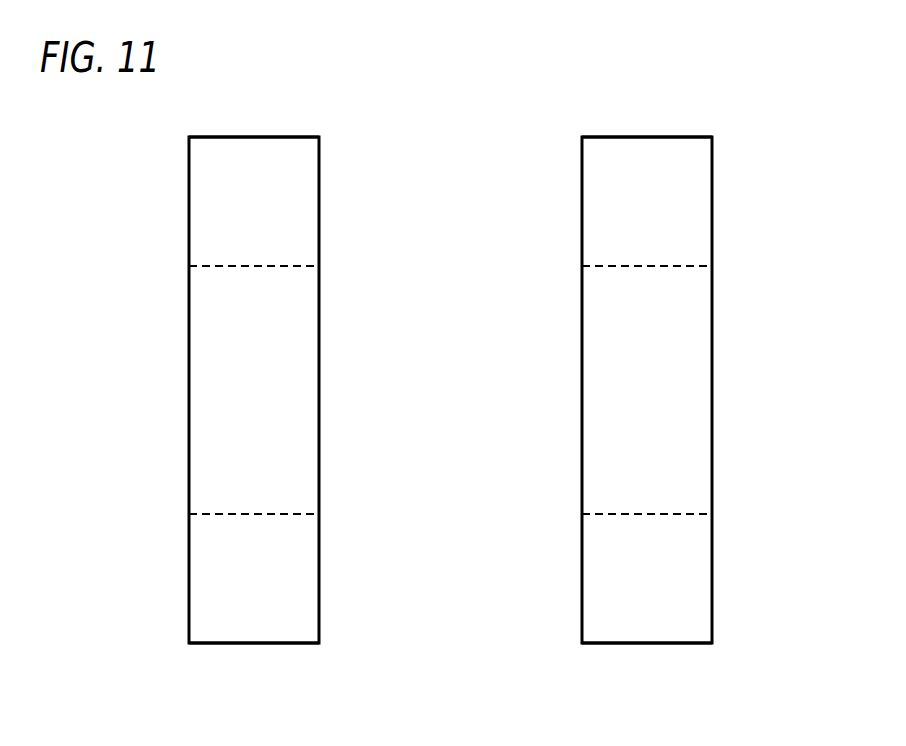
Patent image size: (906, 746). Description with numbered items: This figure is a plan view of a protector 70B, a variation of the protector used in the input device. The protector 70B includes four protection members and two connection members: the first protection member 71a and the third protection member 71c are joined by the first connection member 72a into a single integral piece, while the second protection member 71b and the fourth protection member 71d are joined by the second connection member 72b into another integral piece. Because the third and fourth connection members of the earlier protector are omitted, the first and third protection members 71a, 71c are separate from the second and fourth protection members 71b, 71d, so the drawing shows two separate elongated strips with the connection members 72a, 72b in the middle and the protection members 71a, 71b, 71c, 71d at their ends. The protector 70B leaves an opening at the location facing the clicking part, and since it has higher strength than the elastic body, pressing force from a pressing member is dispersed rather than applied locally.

The protector 70B is at (150, 440).
The first protection member 71a is at (217, 573).
The second protection member 71b is at (696, 565).
The third protection member 71c is at (236, 162).
The fourth protection member 71d is at (664, 172).
The first connection member 72a is at (302, 375).
The second connection member 72b is at (697, 365).